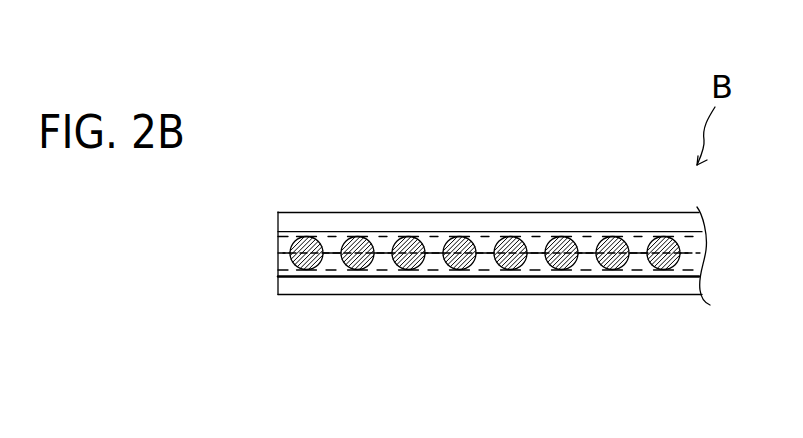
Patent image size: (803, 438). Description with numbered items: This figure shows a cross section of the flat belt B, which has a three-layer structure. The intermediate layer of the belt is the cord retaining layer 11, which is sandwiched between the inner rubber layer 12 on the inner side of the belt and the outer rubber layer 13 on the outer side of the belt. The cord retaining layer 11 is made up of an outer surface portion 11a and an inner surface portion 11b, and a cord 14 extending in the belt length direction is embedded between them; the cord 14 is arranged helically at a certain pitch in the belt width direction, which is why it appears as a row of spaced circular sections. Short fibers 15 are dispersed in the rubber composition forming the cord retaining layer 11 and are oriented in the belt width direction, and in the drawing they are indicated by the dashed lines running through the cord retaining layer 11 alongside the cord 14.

The cord retaining layer 11 is at (172, 223).
The outer surface portion of the cord retaining layer 11a is at (278, 239).
The inner surface portion of the cord retaining layer 11b is at (278, 264).
The inner rubber layer 12 is at (278, 288).
The outer rubber layer 13 is at (278, 219).
The cord 14 is at (462, 244).
The short fibers 15 is at (432, 273).